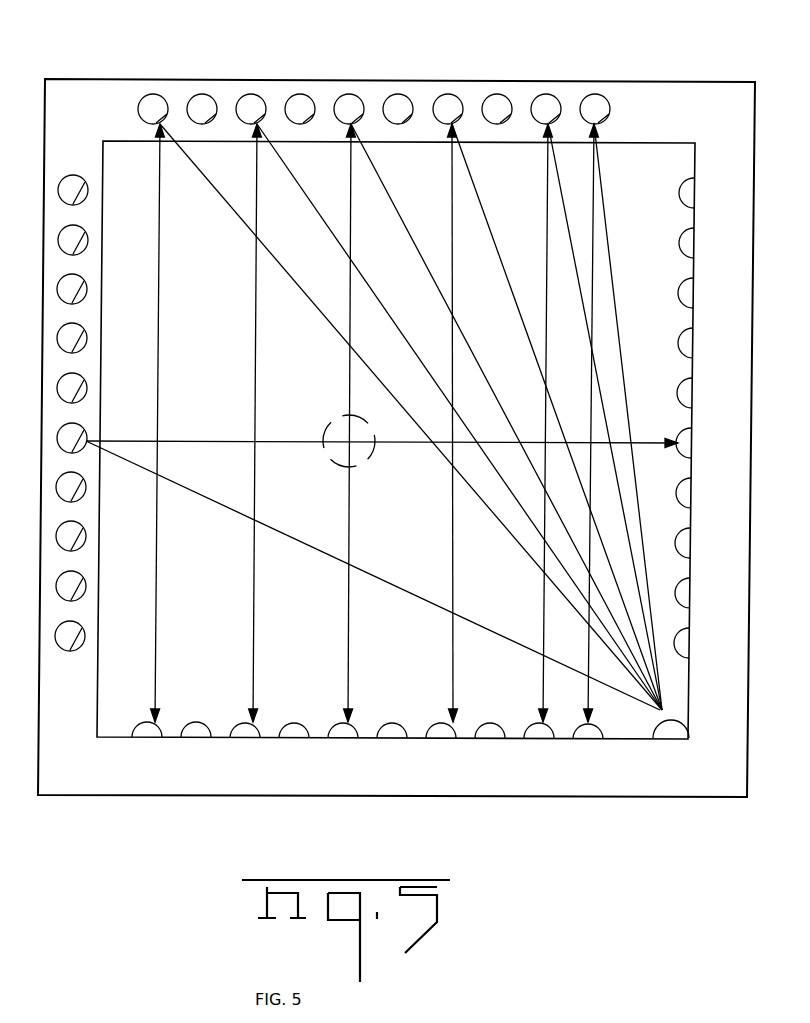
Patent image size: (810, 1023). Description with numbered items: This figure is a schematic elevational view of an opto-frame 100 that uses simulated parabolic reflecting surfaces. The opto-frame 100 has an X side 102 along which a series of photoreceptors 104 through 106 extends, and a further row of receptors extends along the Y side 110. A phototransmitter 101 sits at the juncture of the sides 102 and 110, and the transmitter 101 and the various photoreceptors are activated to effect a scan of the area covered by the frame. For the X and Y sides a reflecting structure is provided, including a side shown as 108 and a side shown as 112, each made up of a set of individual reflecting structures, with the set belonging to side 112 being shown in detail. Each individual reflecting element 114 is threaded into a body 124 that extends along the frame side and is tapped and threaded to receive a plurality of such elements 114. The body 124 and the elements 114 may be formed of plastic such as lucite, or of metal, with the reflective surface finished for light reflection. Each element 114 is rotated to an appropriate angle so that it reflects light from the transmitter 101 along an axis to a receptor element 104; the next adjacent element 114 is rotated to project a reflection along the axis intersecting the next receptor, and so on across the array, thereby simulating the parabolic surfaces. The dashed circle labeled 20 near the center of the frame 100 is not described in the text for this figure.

The opto-frame 100 is at (258, 808).
The phototransmitter 101 is at (677, 723).
The X side 102 is at (467, 740).
The photoreceptor 104 is at (590, 738).
The photoreceptor 106 is at (147, 730).
The reflecting structure side 108 is at (103, 218).
The Y side 110 is at (691, 567).
The reflecting structure side 112 is at (323, 142).
The reflecting element 114 is at (397, 105).
The body 124 is at (62, 95).
The center reference location 20 is at (372, 450).